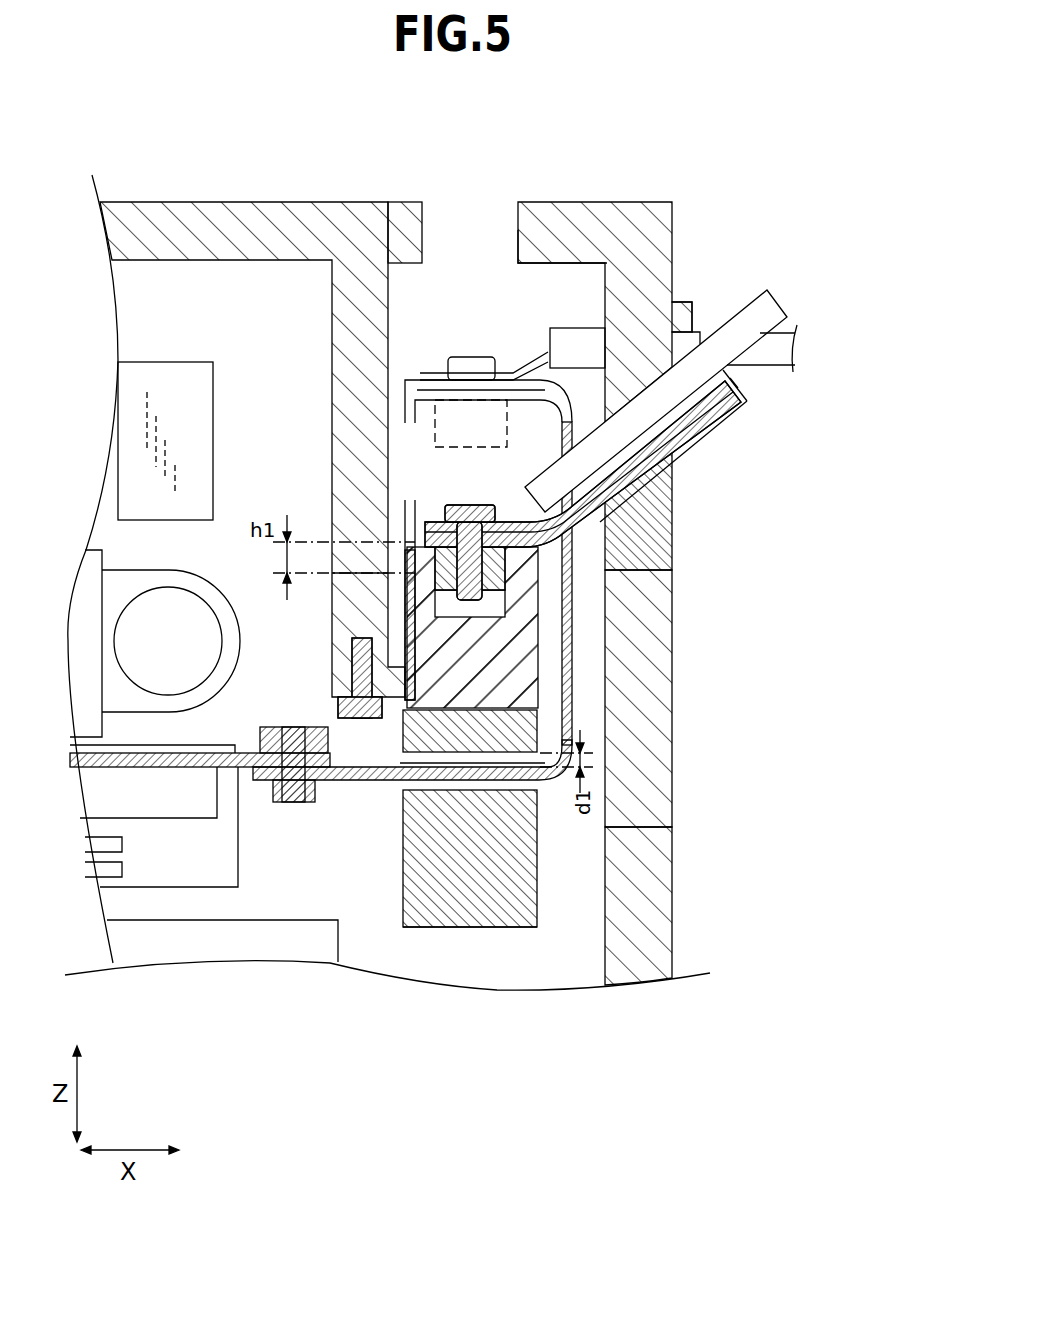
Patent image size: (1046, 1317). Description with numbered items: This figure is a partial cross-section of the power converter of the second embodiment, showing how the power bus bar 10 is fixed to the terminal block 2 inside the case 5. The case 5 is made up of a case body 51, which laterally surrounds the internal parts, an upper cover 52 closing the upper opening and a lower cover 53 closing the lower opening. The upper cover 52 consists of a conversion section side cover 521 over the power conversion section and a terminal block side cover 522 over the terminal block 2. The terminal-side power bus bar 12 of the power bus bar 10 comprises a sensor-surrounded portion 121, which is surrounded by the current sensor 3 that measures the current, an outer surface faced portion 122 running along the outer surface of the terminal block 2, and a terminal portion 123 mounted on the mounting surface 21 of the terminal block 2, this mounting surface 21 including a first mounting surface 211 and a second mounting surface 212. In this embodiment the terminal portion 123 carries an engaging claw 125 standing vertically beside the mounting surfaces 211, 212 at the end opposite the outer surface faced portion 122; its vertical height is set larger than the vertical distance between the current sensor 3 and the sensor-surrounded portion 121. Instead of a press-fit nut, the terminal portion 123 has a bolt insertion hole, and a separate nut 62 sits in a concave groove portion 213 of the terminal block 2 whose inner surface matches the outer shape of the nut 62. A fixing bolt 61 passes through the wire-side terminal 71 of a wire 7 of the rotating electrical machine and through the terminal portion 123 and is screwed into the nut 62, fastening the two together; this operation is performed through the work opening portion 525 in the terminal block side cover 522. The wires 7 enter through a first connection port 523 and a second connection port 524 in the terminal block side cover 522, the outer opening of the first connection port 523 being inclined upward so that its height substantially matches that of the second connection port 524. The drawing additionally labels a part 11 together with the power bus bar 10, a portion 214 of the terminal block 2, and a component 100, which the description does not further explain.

The terminal block 2 is at (540, 655).
The current sensor 3 is at (482, 893).
The case 5 is at (251, 388).
The wires 7 is at (748, 318).
The power bus bar 10 is at (242, 891).
The bolt 11 is at (223, 773).
The terminal-side power bus bar 12 is at (352, 773).
The mounting surface 21 is at (530, 572).
The case body 51 is at (647, 702).
The upper cover 52 is at (448, 532).
The lower cover 53 is at (660, 903).
The fixing bolt 61 is at (478, 358).
The nut 62 is at (480, 425).
The wire-side terminal 71 is at (523, 373).
The device body 100 is at (155, 890).
The sensor-surrounded portion 121 is at (535, 893).
The outer surface faced portion 122 is at (562, 520).
The terminal portion 123 is at (443, 362).
The engaging claw 125 is at (355, 420).
The first mounting surface 211 is at (572, 618).
The second mounting surface 212 is at (405, 383).
The concave groove portion 213 is at (590, 760).
The side portion of bracket 214 is at (405, 487).
The conversion section side cover 521 is at (150, 242).
The terminal block side cover 522 is at (597, 220).
The first connection port 523 is at (745, 396).
The second connection port 524 is at (678, 302).
The work opening portion 525 is at (518, 243).